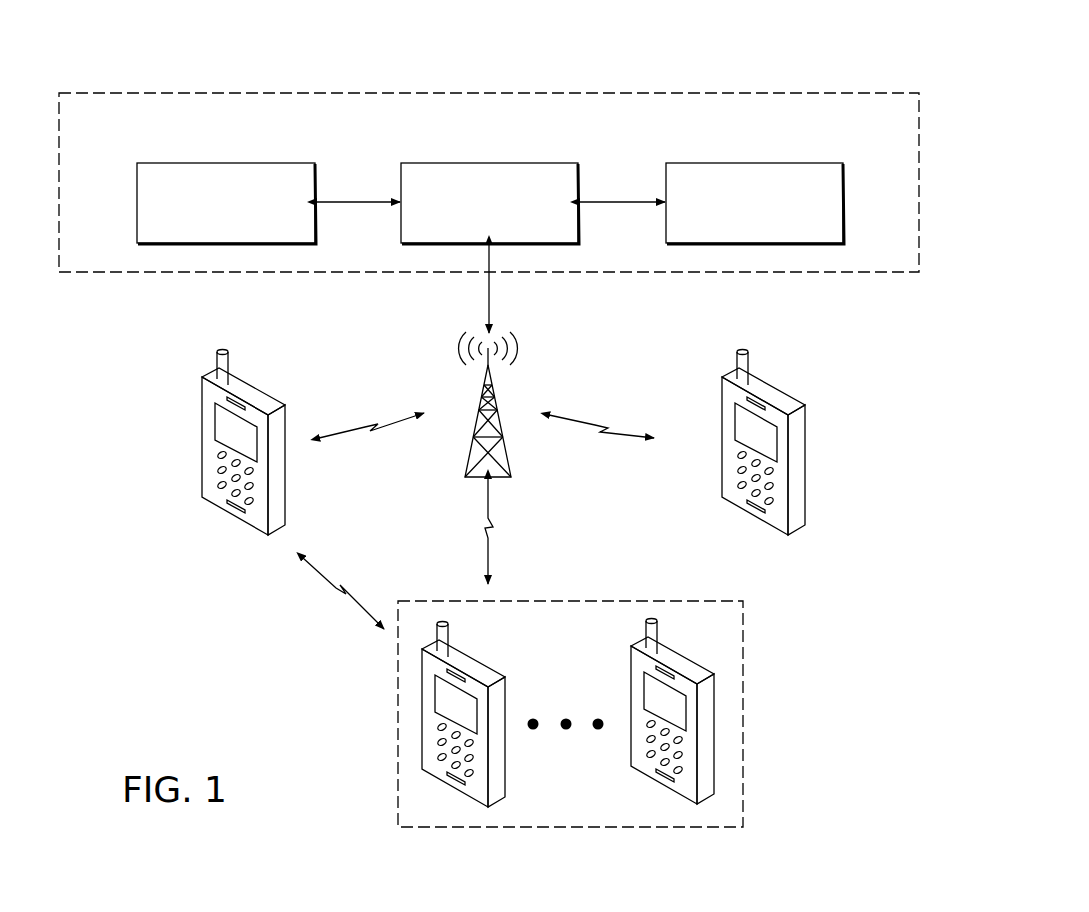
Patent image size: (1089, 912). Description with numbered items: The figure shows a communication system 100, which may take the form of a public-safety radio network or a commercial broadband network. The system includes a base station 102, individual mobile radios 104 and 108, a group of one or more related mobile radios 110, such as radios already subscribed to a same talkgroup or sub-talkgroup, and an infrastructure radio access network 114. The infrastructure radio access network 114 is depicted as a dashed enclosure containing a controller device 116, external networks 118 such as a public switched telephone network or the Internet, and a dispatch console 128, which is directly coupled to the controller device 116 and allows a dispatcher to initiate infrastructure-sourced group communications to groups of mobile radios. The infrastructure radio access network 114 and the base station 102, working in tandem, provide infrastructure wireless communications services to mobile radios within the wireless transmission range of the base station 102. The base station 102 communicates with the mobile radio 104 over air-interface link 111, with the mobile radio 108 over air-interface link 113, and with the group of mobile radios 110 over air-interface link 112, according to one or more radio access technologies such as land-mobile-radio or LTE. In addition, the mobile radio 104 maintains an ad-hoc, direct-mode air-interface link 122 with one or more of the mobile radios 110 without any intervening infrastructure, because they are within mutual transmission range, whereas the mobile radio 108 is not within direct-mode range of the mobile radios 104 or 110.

The communication system 100 is at (1034, 82).
The infrastructure radio access network 114 is at (489, 93).
The external networks 118 is at (223, 163).
The controller device 116 is at (489, 163).
The dispatch console 128 is at (750, 163).
The base station 102 is at (485, 392).
The mobile radio 104 is at (202, 437).
The mobile radio 108 is at (806, 464).
The group of mobile radios 110 is at (744, 712).
The air-interface link 111 is at (350, 430).
The air-interface link 112 is at (487, 506).
The air-interface link 113 is at (625, 430).
The air-interface link 122 is at (322, 582).